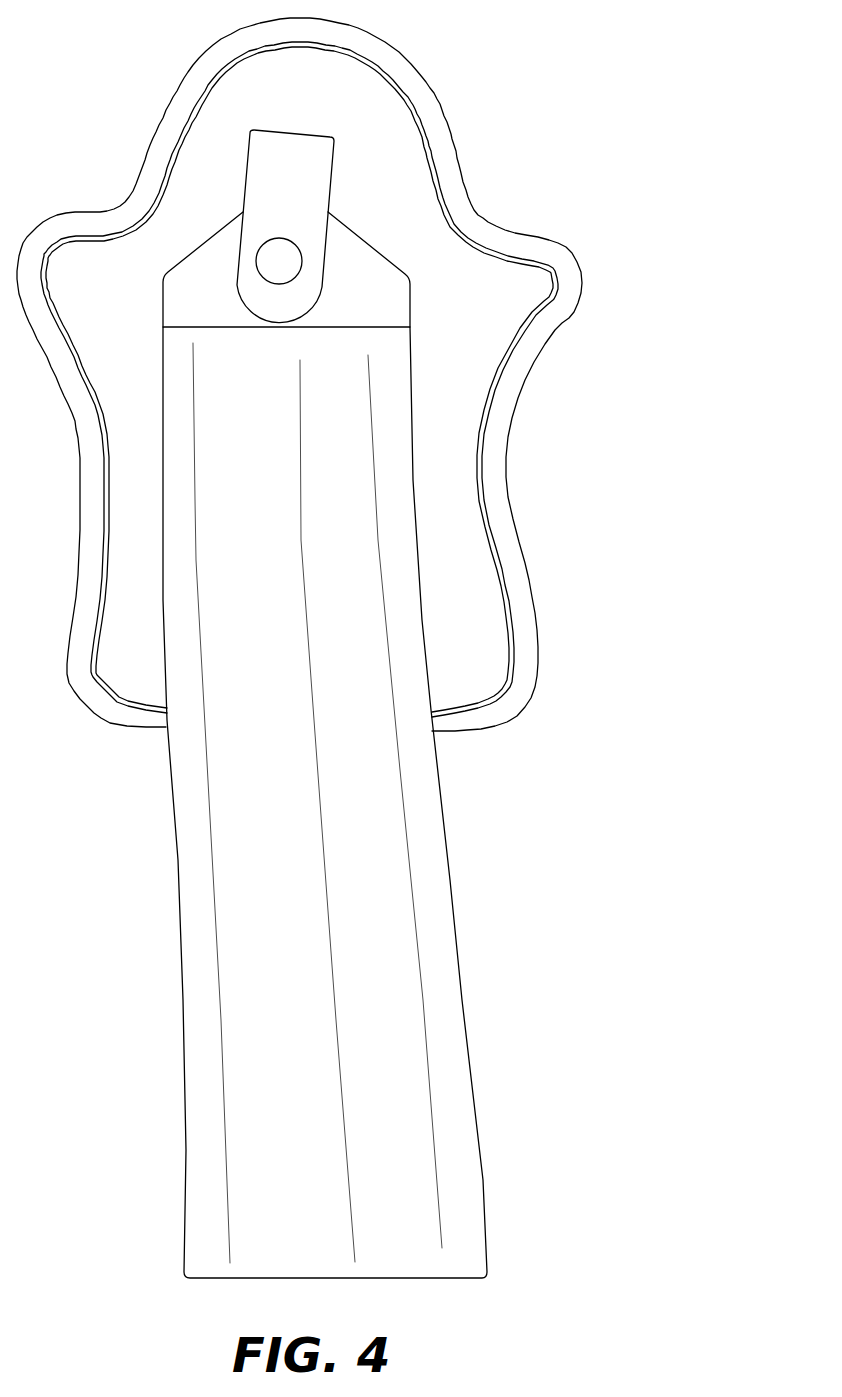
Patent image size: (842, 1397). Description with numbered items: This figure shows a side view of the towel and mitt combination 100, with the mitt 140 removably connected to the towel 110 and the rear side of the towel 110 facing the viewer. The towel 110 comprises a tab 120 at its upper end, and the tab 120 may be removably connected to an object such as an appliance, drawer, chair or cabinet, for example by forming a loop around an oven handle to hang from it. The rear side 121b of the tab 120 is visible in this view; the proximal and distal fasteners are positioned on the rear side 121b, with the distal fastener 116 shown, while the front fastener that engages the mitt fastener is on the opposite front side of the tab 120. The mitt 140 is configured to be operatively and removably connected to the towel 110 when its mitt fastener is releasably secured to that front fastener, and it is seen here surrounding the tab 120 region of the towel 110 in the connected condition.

The towel and mitt combination 100 is at (686, 24).
The towel 110 is at (457, 941).
The distal fastener 116 is at (269, 255).
The tab 120 is at (286, 228).
The rear side of the tab 121b is at (183, 297).
The mitt 140 is at (433, 93).